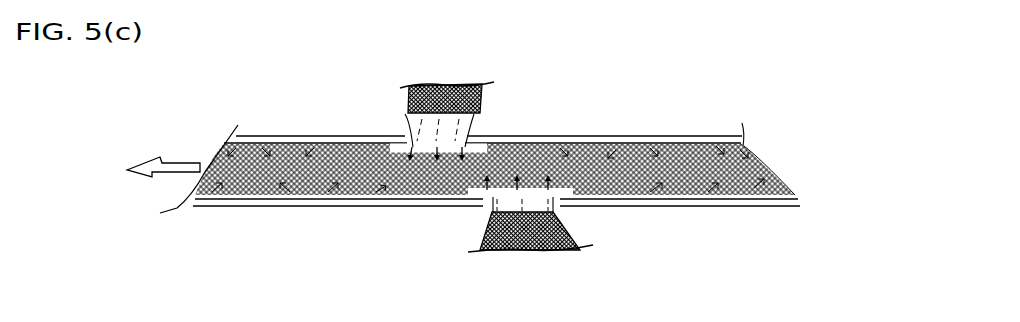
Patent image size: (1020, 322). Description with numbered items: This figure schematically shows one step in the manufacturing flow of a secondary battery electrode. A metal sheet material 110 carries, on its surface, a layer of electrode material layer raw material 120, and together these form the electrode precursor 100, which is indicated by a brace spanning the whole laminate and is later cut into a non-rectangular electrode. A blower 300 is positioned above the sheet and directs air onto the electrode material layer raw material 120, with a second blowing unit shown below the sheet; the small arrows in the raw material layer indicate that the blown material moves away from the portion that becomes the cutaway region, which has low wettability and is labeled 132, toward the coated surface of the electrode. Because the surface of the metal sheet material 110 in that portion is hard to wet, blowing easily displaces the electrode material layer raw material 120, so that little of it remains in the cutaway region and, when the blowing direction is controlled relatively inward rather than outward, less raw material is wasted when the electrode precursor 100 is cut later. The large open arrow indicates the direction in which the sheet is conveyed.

The electrode precursor 100 is at (535, 181).
The metal sheet material 110 is at (781, 206).
The electrode material layer raw material 120 is at (697, 158).
The lower film surface (130a) 132 is at (685, 195).
The blower 300 is at (478, 108).